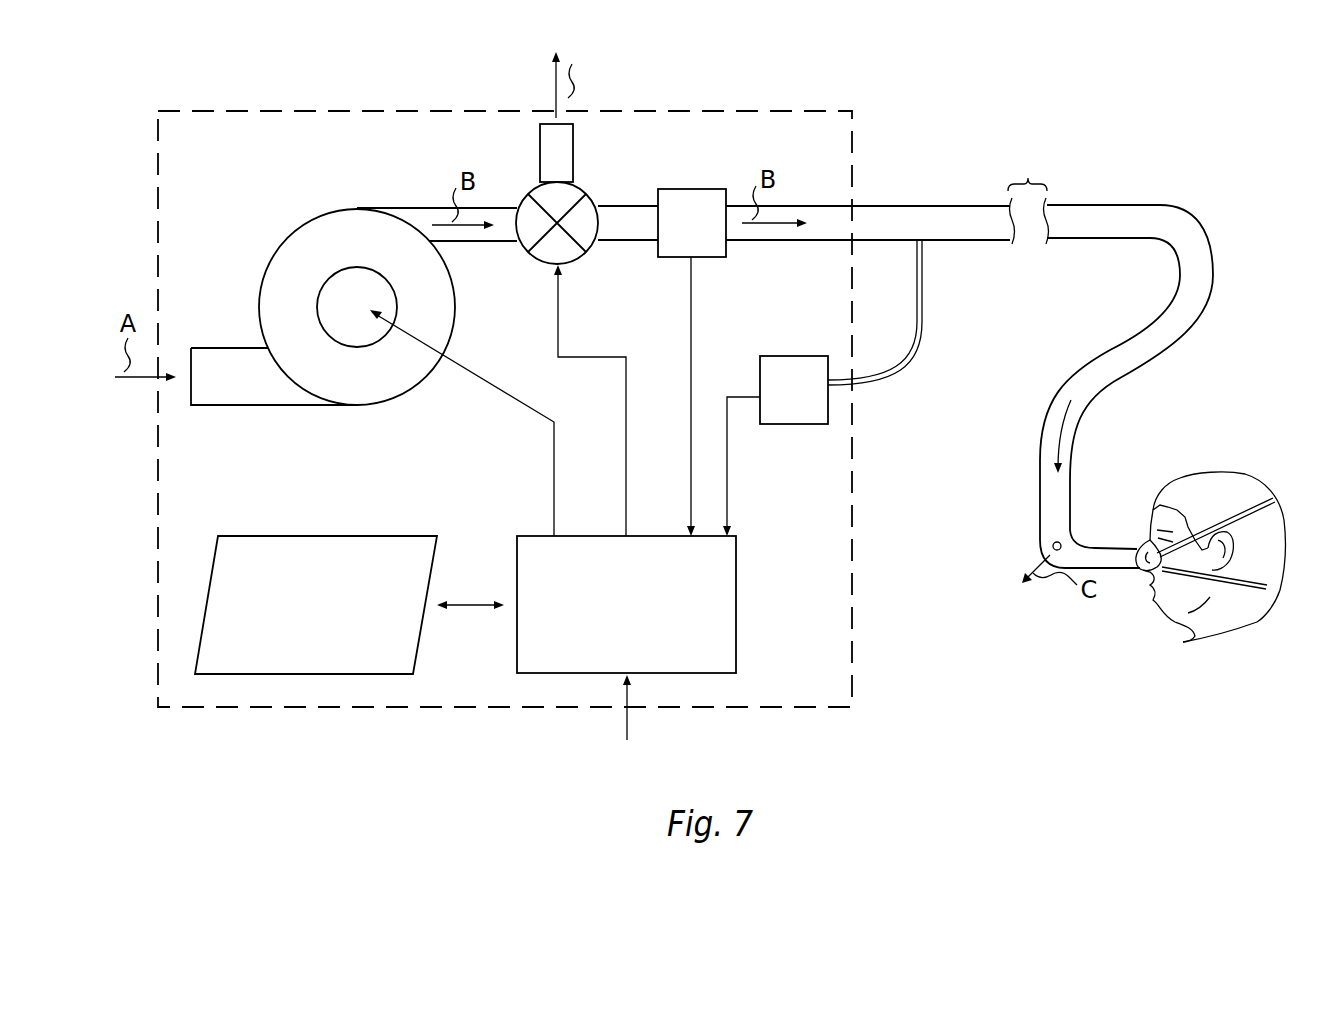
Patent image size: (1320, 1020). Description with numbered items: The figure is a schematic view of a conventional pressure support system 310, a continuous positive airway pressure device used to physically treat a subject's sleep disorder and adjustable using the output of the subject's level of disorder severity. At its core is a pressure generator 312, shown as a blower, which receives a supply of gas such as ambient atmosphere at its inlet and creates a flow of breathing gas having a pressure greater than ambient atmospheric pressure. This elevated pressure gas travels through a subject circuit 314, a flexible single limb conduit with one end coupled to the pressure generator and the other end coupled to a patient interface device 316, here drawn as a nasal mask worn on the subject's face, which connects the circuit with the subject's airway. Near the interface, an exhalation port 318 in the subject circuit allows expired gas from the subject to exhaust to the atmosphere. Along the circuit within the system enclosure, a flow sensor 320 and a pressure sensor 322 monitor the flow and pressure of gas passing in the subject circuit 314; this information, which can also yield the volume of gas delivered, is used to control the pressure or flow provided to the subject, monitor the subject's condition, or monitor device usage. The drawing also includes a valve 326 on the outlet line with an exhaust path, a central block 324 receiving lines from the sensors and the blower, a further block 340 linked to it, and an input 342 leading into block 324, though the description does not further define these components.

The pressure support system 310 is at (848, 92).
The pressure generator 312 is at (320, 218).
The subject circuit 314 is at (1207, 224).
The patient interface device 316 is at (1143, 541).
The exhalation port 318 is at (1052, 544).
The flow sensor 320 is at (834, 362).
The pressure sensor 322 is at (822, 388).
The controller 324 is at (626, 604).
The exhaust valve 326 is at (588, 196).
The memory/display 340 is at (349, 605).
The input 342 is at (627, 727).